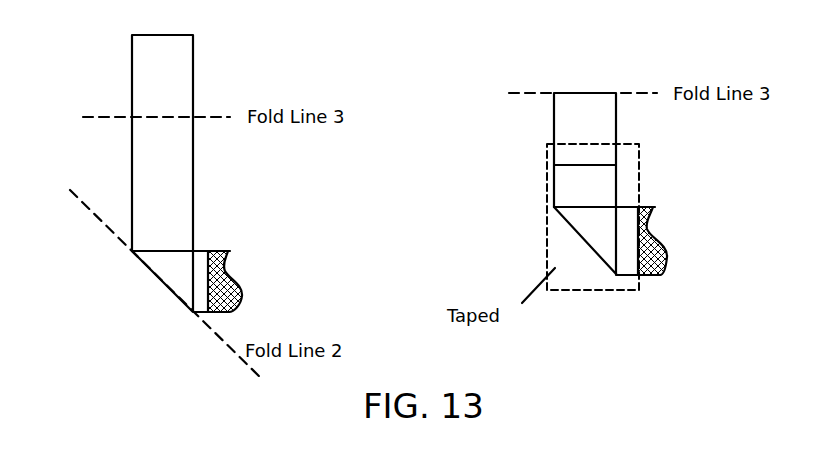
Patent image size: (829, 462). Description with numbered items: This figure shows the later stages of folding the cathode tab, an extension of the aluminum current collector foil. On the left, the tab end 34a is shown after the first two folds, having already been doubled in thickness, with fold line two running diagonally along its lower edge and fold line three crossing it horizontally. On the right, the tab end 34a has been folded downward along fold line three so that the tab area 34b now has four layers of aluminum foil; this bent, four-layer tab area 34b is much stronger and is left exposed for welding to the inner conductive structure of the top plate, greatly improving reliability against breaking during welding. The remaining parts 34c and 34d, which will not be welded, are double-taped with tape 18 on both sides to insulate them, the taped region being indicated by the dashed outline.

The tab end 34a is at (160, 88).
The tab area 34b is at (590, 115).
The remaining tab part 34c is at (595, 194).
The remaining tab part 34d is at (587, 222).
The tape 18 is at (625, 165).